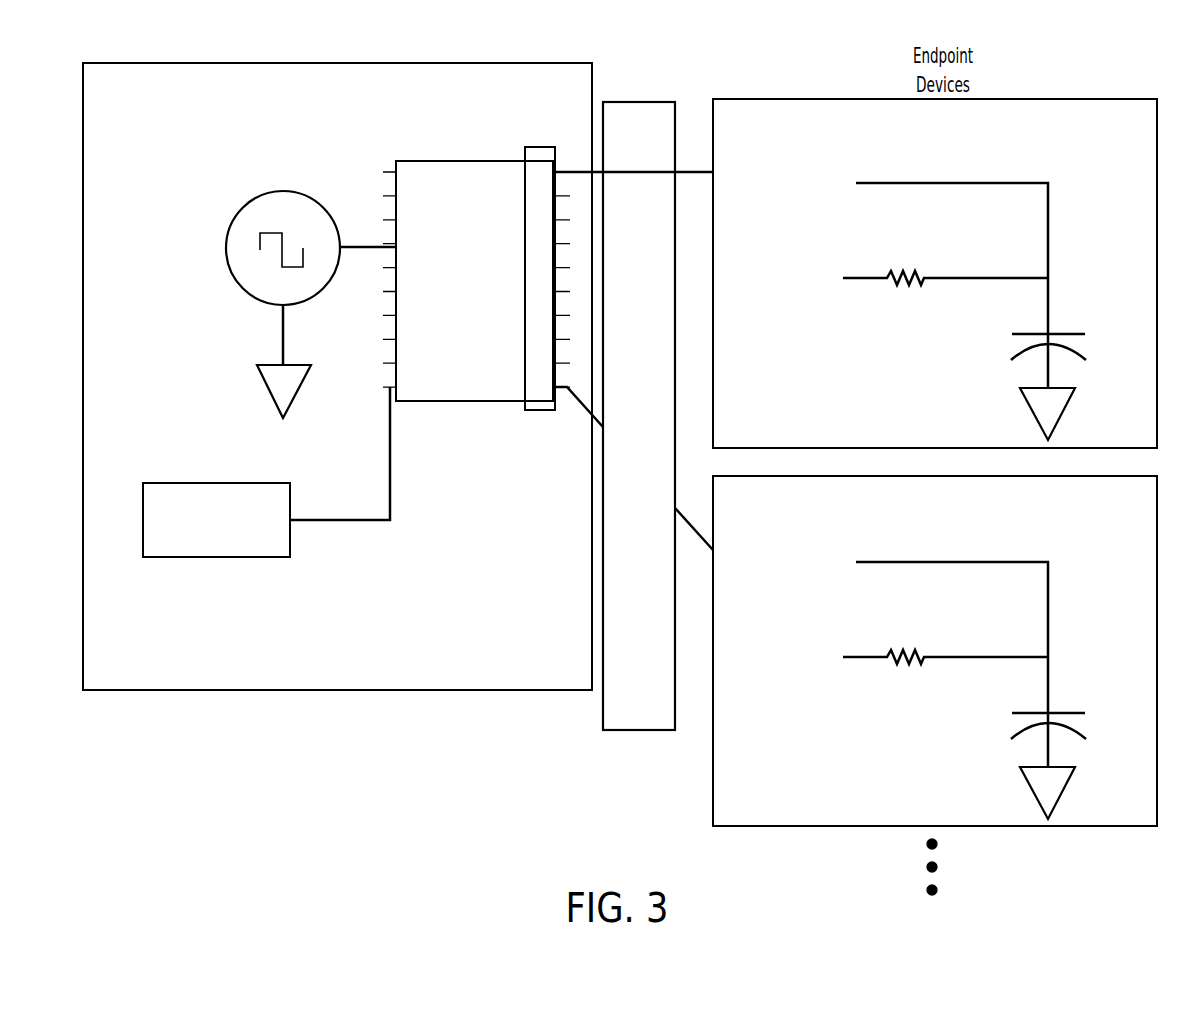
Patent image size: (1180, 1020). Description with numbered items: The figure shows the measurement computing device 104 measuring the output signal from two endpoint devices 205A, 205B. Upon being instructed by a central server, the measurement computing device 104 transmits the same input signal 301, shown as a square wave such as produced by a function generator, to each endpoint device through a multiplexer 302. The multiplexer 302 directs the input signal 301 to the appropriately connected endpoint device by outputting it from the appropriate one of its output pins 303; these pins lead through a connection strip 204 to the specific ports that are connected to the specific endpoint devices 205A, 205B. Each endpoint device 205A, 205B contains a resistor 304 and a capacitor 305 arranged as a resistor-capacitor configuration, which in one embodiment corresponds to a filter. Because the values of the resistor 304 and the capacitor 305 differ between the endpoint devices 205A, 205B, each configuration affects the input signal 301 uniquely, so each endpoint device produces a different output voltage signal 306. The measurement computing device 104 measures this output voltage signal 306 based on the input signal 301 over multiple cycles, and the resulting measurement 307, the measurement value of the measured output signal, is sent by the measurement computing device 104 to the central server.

The measurement computing device 104 is at (150, 63).
The connection strip 204 is at (637, 730).
The endpoint device 205A is at (1100, 99).
The endpoint device 205B is at (1098, 827).
The input signal 301 is at (237, 248).
The multiplexer 302 is at (475, 161).
The output pins 303 is at (540, 410).
The resistor 304 is at (905, 290).
The capacitor 305 is at (1010, 357).
The output voltage signal 306 is at (803, 147).
The measurement 307 is at (216, 557).